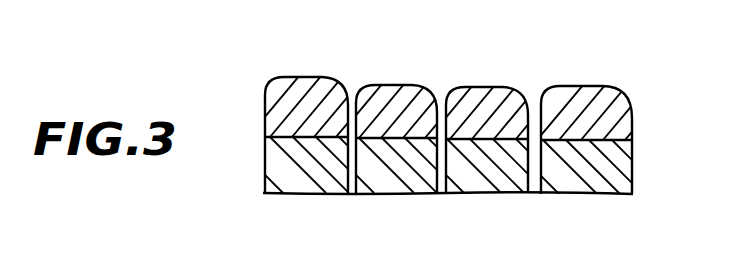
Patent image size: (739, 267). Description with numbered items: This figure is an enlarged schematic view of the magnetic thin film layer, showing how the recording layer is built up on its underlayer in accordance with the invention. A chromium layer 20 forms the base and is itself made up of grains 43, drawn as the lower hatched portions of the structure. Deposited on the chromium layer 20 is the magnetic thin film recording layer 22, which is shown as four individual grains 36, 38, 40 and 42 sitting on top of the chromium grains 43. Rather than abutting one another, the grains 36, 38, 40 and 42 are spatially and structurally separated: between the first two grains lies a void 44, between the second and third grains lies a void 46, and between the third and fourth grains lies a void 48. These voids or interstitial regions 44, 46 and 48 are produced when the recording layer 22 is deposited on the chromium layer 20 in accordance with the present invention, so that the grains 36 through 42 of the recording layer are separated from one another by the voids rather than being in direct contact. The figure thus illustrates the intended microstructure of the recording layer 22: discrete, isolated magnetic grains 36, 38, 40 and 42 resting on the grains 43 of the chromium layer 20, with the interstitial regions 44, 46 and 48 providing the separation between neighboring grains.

The chromium layer 20 is at (468, 199).
The magnetic thin film recording layer 22 is at (648, 106).
The grain 36 is at (296, 85).
The grain 38 is at (393, 92).
The grain 40 is at (480, 95).
The grain 42 is at (587, 95).
The grain 43 is at (312, 177).
The void 44 is at (349, 192).
The void 46 is at (444, 193).
The void 48 is at (533, 193).